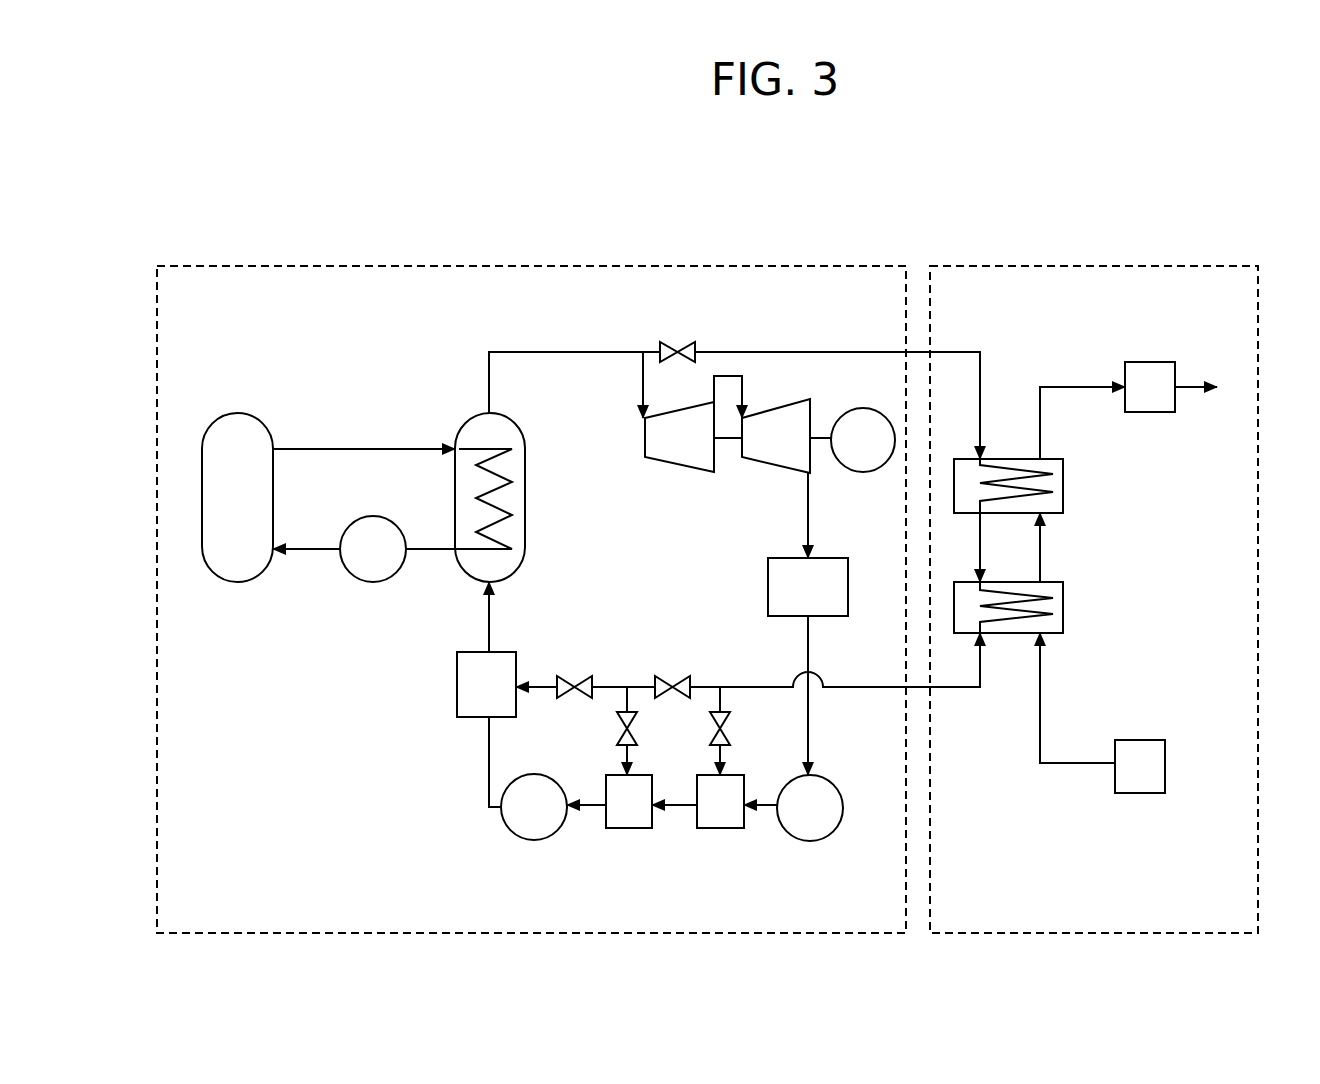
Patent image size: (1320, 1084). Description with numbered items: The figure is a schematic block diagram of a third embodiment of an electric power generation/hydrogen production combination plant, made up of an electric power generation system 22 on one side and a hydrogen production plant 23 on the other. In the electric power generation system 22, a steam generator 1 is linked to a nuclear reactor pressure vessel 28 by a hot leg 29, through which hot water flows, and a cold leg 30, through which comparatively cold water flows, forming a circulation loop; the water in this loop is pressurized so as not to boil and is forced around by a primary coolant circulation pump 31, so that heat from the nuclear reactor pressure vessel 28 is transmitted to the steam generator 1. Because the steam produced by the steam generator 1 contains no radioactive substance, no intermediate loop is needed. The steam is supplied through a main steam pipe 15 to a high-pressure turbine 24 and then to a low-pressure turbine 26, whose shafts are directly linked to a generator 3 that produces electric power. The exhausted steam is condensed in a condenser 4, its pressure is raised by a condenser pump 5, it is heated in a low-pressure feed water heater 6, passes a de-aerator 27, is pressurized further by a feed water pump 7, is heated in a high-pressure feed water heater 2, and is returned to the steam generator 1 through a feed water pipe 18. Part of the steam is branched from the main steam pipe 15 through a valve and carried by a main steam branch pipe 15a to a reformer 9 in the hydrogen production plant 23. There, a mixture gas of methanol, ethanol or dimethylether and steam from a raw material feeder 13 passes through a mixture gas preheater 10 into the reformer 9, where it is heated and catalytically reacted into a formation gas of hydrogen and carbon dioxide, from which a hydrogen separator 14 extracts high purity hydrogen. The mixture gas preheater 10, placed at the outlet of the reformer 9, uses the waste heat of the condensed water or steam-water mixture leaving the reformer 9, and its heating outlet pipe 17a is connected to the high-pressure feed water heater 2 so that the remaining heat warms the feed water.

The steam generator 1 is at (527, 486).
The high-pressure feed water heater 2 is at (457, 703).
The generator 3 is at (870, 473).
The condenser 4 is at (768, 592).
The condenser pump 5 is at (810, 842).
The low-pressure feed water heater 6 is at (715, 830).
The feed water pump 7 is at (530, 842).
The reformer 9 is at (1065, 472).
The mixture gas preheater 10 is at (1065, 598).
The raw material feeder 13 is at (1130, 795).
The hydrogen separator 14 is at (1140, 360).
The main steam pipe 15 is at (618, 350).
The main steam branch pipe 15a is at (736, 350).
The heating outlet pipe 17a is at (957, 690).
The feed water pipe 18 is at (489, 625).
The electric power generation system 22 is at (620, 263).
The hydrogen production plant 23 is at (1180, 263).
The high-pressure turbine 24 is at (666, 460).
The low-pressure turbine 26 is at (759, 476).
The de-aerator 27 is at (622, 830).
The nuclear reactor pressure vessel 28 is at (262, 420).
The hot leg 29 is at (351, 445).
The cold leg 30 is at (433, 552).
The primary coolant circulation pump 31 is at (352, 582).